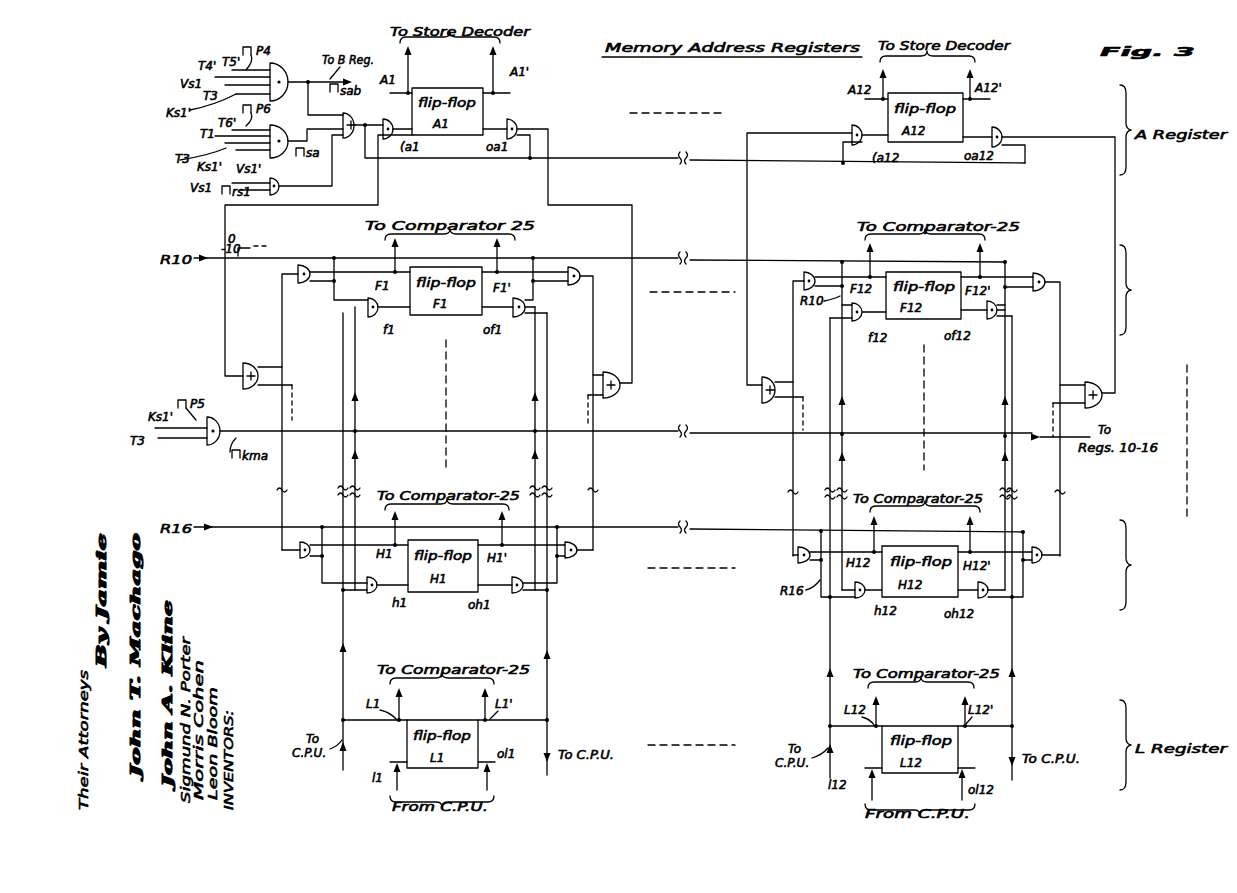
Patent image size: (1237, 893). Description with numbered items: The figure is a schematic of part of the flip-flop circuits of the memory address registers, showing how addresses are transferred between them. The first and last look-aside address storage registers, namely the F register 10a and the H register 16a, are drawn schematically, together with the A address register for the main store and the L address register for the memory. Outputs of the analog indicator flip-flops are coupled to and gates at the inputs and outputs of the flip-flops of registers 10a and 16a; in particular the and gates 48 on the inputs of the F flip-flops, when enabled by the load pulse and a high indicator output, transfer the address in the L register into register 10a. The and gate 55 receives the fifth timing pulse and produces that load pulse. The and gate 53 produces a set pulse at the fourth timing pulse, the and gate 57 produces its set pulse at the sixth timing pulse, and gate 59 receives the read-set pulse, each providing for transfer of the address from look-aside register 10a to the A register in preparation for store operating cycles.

The and gate 53 is at (282, 67).
The and gate 57 is at (280, 125).
The gate 59 is at (281, 182).
The and gate 55 is at (219, 424).
The and gates 48 is at (372, 319).
The F register 10a is at (1176, 290).
The H register 16a is at (1174, 565).